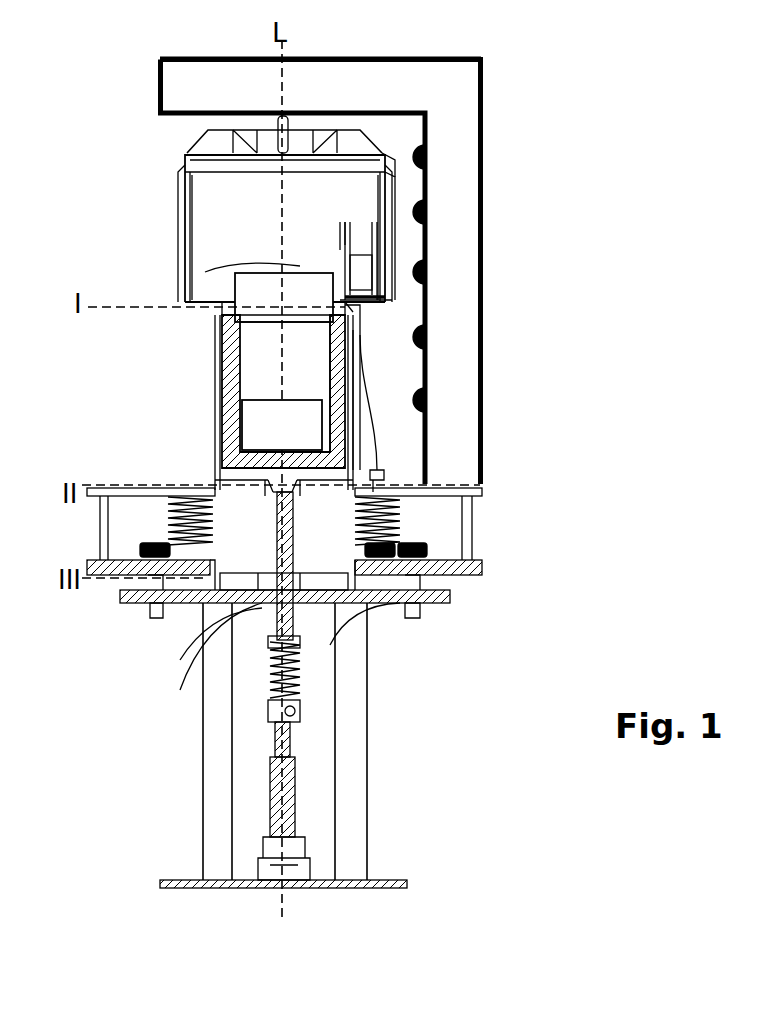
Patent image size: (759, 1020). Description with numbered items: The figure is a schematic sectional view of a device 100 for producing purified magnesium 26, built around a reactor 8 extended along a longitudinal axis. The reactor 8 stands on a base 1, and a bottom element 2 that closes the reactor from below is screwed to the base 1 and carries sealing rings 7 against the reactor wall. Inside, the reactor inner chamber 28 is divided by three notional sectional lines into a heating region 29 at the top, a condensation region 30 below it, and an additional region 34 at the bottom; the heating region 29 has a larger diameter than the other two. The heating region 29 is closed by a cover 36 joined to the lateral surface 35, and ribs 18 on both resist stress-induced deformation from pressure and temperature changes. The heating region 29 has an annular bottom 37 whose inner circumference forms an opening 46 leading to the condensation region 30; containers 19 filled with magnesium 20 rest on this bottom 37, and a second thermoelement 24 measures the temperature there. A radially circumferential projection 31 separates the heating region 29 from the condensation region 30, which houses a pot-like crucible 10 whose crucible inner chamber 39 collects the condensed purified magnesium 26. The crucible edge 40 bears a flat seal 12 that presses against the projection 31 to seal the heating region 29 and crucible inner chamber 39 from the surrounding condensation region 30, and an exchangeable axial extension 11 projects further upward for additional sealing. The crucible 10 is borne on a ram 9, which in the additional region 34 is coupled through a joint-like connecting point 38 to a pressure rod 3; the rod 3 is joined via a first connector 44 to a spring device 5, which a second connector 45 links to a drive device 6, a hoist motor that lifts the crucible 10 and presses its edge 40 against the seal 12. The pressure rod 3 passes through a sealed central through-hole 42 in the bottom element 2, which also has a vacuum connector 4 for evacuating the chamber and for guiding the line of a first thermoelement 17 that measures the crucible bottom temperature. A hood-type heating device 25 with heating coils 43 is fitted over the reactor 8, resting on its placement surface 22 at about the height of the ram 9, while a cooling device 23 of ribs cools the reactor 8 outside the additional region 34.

The device for producing purified magnesium 100 is at (332, 44).
The heating device 25 is at (460, 98).
The cover 36 is at (335, 150).
The reactor 8 is at (178, 183).
The reactor inner chamber 28 is at (215, 207).
The heating region 29 is at (185, 232).
The lateral surface 35 is at (388, 177).
The ribs 18 is at (345, 140).
The containers 19 is at (392, 228).
The opening 46 is at (380, 240).
The magnesium 20 is at (312, 297).
The second thermoelement 24 is at (330, 243).
The edge 40 is at (235, 298).
The axial extension 11 is at (230, 305).
The condensation region 30 is at (265, 355).
The projection 31 is at (265, 372).
The crucible inner chamber 39 is at (268, 376).
The purified magnesium 26 is at (242, 410).
The seal 12 is at (348, 318).
The heating coils 43 is at (360, 338).
The crucible 10 is at (337, 382).
The bottom 37 is at (358, 312).
The ram 9 is at (345, 468).
The placement surface 22 is at (300, 482).
The joint-like connecting point 38 is at (310, 490).
The cooling device 23 is at (170, 512).
The additional region 34 is at (245, 526).
The first thermoelement 17 is at (155, 553).
The base 1 is at (368, 578).
The sealing rings 7 is at (448, 596).
The bottom element 2 is at (305, 588).
The vacuum connector 4 is at (185, 672).
The through-hole 42 is at (262, 597).
The pressure rod 3 is at (300, 612).
The first connector 44 is at (332, 641).
The spring device 5 is at (302, 672).
The second connector 45 is at (298, 707).
The drive device 6 is at (300, 812).